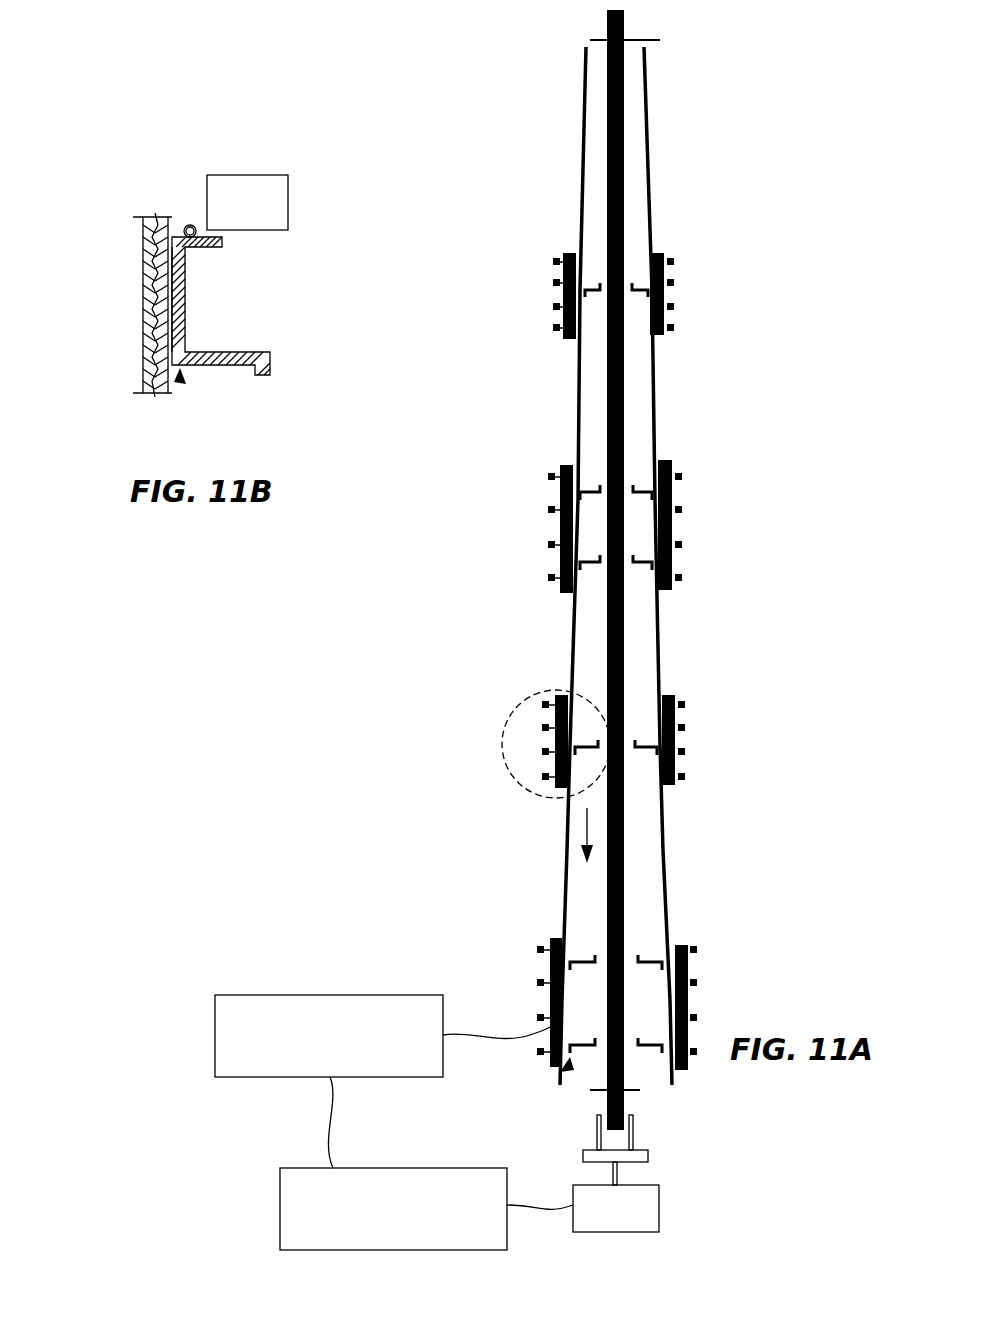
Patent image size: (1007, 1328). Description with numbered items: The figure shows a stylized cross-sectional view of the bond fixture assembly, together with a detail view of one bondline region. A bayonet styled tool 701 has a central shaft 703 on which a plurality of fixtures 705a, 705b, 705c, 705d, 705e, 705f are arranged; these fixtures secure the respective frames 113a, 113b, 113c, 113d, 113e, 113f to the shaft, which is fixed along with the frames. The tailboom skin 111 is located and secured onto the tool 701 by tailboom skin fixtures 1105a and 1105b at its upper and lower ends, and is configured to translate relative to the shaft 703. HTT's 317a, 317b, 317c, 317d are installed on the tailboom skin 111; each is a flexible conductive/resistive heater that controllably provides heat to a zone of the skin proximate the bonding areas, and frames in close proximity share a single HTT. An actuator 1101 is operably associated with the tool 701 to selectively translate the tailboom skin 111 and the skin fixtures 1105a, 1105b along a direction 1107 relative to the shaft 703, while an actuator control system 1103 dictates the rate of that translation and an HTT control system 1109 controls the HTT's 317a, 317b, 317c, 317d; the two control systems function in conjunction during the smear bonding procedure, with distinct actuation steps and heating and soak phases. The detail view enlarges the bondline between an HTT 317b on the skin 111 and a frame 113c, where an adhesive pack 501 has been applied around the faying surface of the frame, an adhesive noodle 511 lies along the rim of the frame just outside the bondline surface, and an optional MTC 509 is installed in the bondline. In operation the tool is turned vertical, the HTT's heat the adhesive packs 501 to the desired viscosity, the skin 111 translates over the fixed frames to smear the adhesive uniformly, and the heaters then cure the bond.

In FIG. 11A, the tailboom skin 111 is at (665, 902).
In FIG. 11B, the tailboom skin 111 is at (185, 252).
In FIG. 11A, the frame 113a is at (557, 1020).
In FIG. 11A, the frame 113b is at (555, 940).
In FIG. 11A, the frame 113c is at (548, 792).
In FIG. 11B, the frame 113c is at (185, 297).
In FIG. 11A, the frame 113d is at (567, 565).
In FIG. 11A, the frame 113e is at (585, 487).
In FIG. 11A, the frame 113f is at (582, 275).
In FIG. 11A, the HTT 317a is at (690, 997).
In FIG. 11A, the HTT 317b is at (678, 725).
In FIG. 11B, the HTT 317b is at (140, 330).
In FIG. 11A, the HTT 317c is at (675, 523).
In FIG. 11A, the HTT 317d is at (668, 296).
In FIG. 11A, the adhesive pack 501 is at (566, 1066).
In FIG. 11B, the adhesive pack 501 is at (184, 376).
In FIG. 11B, the MTC 509 is at (225, 175).
In FIG. 11B, the adhesive noodle 511 is at (186, 228).
In FIG. 11A, the tool 701 is at (648, 1113).
In FIG. 11A, the central shaft 703 is at (625, 872).
In FIG. 11A, the fixture 705a is at (648, 1085).
In FIG. 11A, the fixture 705b is at (640, 940).
In FIG. 11A, the fixture 705c is at (640, 760).
In FIG. 11A, the fixture 705d is at (645, 578).
In FIG. 11A, the fixture 705e is at (640, 483).
In FIG. 11A, the fixture 705f is at (636, 300).
In FIG. 11A, the actuator 1101 is at (659, 1205).
In FIG. 11A, the actuator control system 1103 is at (305, 1168).
In FIG. 11A, the tailboom skin fixture 1105a is at (592, 1090).
In FIG. 11A, the tailboom skin fixture 1105b is at (590, 42).
In FIG. 11A, the direction 1107 is at (585, 823).
In FIG. 11A, the HTT control system 1109 is at (325, 995).